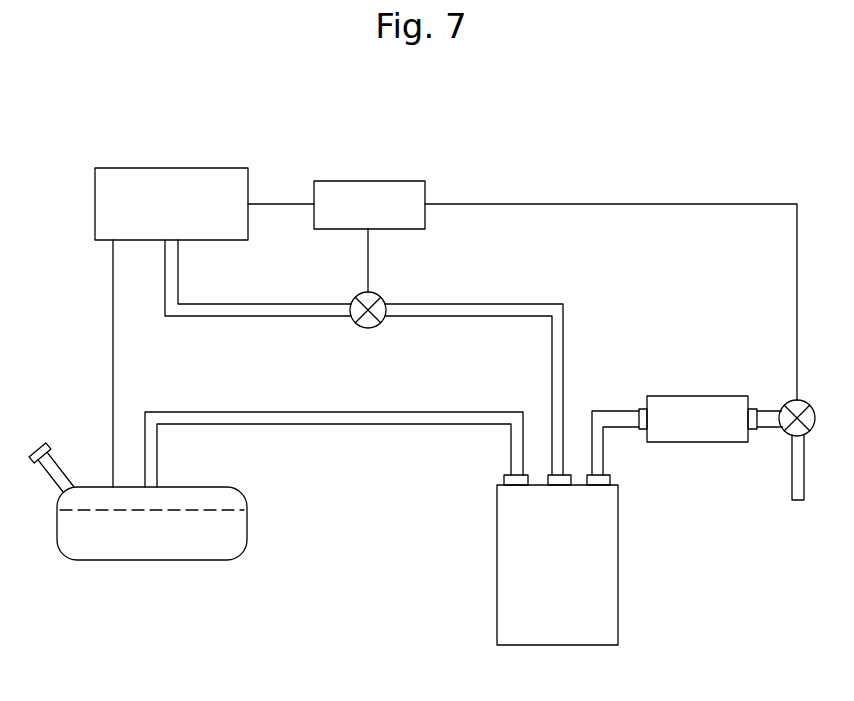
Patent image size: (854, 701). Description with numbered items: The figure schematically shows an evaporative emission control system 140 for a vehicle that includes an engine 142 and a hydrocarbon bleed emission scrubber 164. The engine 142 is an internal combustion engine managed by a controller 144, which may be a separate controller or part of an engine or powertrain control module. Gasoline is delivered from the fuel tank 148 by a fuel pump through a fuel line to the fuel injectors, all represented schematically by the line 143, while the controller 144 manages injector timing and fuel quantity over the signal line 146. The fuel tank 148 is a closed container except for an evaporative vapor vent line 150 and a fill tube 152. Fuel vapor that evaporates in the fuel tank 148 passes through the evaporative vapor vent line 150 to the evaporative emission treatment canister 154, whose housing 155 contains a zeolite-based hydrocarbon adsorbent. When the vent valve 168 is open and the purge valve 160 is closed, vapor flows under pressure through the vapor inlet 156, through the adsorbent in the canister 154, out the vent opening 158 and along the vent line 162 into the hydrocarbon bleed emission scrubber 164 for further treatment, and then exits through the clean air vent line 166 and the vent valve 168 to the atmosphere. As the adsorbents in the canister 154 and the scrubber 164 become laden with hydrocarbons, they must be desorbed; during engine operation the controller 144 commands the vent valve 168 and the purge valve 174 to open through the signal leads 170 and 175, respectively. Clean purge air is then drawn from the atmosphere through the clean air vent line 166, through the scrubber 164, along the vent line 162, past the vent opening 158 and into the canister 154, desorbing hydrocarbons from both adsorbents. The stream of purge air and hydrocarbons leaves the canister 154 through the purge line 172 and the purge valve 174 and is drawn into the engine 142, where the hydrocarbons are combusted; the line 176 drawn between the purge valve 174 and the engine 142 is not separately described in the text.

The evaporative emission control system 140 is at (113, 116).
The engine 142 is at (171, 168).
The fuel line 143 is at (113, 372).
The controller 144 is at (388, 181).
The signal line 146 is at (280, 204).
The fuel tank 148 is at (240, 556).
The evaporative vapor vent line 150 is at (318, 424).
The fill tube 152 is at (46, 479).
The evaporative emission treatment canister 154 is at (578, 504).
The housing 155 is at (497, 600).
The vapor inlet 156 is at (499, 482).
The vent opening 158 is at (618, 485).
The purge valve 160 is at (547, 472).
The vent line 162 is at (616, 411).
The hydrocarbon bleed emission scrubber 164 is at (698, 396).
The clean air vent line 166 is at (805, 466).
The vent valve 168 is at (800, 400).
The signal lead 170 is at (707, 204).
The purge line 172 is at (515, 304).
The purge valve 174 is at (372, 328).
The signal lead 175 is at (370, 262).
The purge line to engine 176 is at (318, 304).